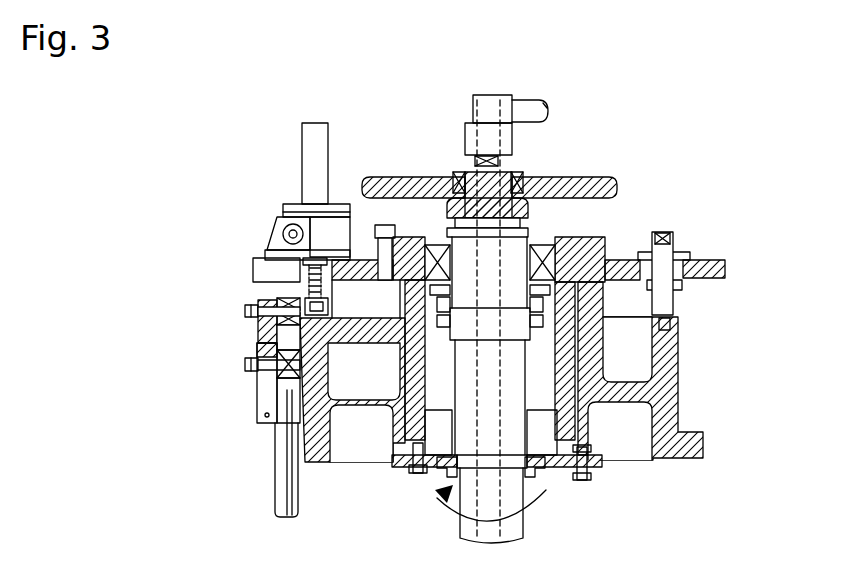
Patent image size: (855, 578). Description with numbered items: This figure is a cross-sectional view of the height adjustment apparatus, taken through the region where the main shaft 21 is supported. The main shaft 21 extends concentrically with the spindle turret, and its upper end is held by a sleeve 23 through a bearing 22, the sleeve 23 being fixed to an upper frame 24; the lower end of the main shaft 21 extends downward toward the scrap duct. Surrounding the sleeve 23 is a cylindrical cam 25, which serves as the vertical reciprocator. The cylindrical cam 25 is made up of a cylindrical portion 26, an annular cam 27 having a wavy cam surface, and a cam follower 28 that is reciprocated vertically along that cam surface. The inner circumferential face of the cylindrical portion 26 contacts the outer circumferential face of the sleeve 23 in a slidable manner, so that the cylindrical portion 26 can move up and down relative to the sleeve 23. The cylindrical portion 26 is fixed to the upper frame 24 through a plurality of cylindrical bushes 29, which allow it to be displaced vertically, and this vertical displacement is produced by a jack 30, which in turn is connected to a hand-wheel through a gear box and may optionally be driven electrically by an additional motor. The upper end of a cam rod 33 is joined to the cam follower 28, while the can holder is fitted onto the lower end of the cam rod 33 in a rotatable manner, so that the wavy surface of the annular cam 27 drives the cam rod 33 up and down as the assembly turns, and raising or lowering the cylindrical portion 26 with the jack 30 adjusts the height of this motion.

The main shaft 21 is at (468, 247).
The bearing 22 is at (541, 256).
The sleeve 23 is at (600, 237).
The upper frame 24 is at (707, 269).
The cylindrical cam 25 is at (714, 336).
The cylindrical portion 26 is at (667, 385).
The annular cam 27 is at (290, 340).
The cam follower 28 is at (268, 398).
The cylindrical bush 29 is at (668, 247).
The jack 30 is at (278, 234).
The cam rod 33 is at (282, 480).